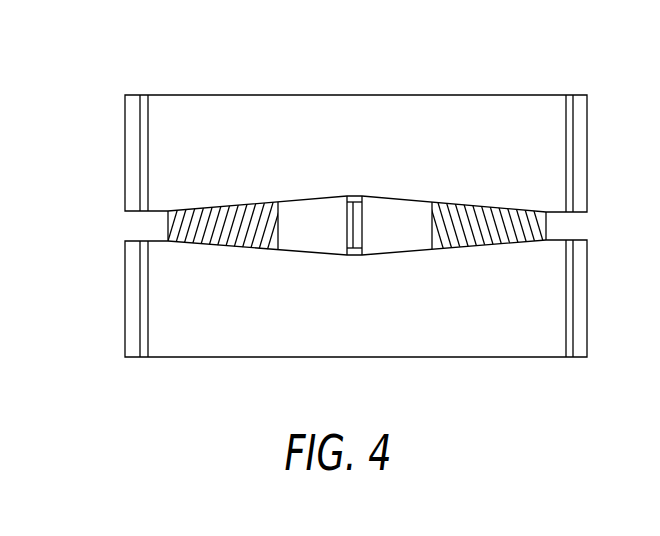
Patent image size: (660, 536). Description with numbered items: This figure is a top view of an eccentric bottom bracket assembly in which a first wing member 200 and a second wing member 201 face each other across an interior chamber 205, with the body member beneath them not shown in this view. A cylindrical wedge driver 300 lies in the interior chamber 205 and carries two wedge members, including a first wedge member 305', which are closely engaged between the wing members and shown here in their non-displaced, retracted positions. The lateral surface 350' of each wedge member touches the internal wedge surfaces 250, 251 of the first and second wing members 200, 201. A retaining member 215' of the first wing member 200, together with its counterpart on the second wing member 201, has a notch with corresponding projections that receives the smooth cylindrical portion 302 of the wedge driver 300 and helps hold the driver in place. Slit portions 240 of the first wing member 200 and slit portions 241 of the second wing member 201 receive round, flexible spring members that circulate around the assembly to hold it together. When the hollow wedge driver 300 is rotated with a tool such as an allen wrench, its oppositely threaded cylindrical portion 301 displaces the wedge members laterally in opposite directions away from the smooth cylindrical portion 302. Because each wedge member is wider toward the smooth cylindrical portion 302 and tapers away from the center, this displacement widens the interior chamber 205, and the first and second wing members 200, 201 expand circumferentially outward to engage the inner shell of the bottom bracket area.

The first wing member 200 is at (523, 343).
The second wing member 201 is at (528, 108).
The interior chamber 205 is at (570, 226).
The slit portions of the first wing member 240 is at (146, 337).
The slit portions of the second wing member 241 is at (146, 134).
The internal wedge surface 250 is at (296, 261).
The internal wedge surface 251 is at (327, 182).
The wedge driver 300 is at (166, 227).
The oppositely threaded cylindrical portion 301 is at (207, 222).
The smooth cylindrical portion 302 is at (353, 230).
The first wedge member 305' is at (265, 126).
The lateral surface 350' is at (380, 136).
The retaining member 215' is at (352, 328).